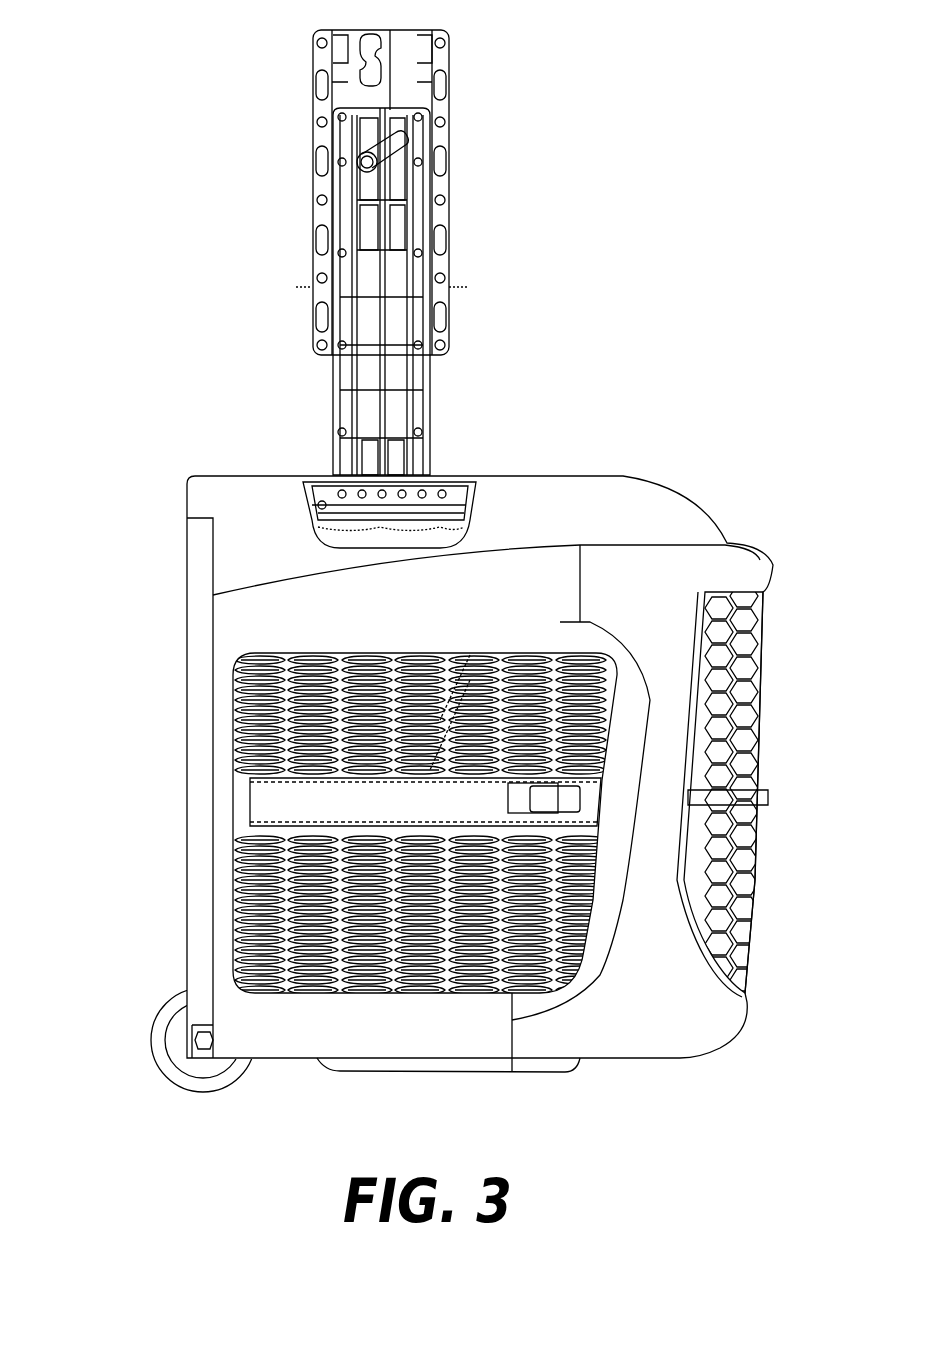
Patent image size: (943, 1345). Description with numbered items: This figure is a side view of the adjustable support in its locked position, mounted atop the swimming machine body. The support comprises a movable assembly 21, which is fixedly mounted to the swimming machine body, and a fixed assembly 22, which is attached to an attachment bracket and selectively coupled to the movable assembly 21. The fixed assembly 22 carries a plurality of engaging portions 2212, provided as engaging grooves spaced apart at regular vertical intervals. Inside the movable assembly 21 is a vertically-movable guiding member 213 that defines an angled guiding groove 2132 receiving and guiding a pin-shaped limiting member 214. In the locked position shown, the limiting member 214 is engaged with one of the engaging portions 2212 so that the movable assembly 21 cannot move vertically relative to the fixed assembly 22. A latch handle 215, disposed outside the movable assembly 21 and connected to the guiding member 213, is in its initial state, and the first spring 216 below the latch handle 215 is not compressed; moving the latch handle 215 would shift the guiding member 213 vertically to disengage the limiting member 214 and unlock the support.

The fixed assembly 22 is at (313, 80).
The engaging portions 2212 is at (372, 82).
The limiting member 214 is at (362, 157).
The guiding groove 2132 is at (403, 138).
The guiding member 213 is at (363, 388).
The movable assembly 21 is at (428, 415).
The latch handle 215 is at (330, 495).
The first spring 216 is at (320, 505).